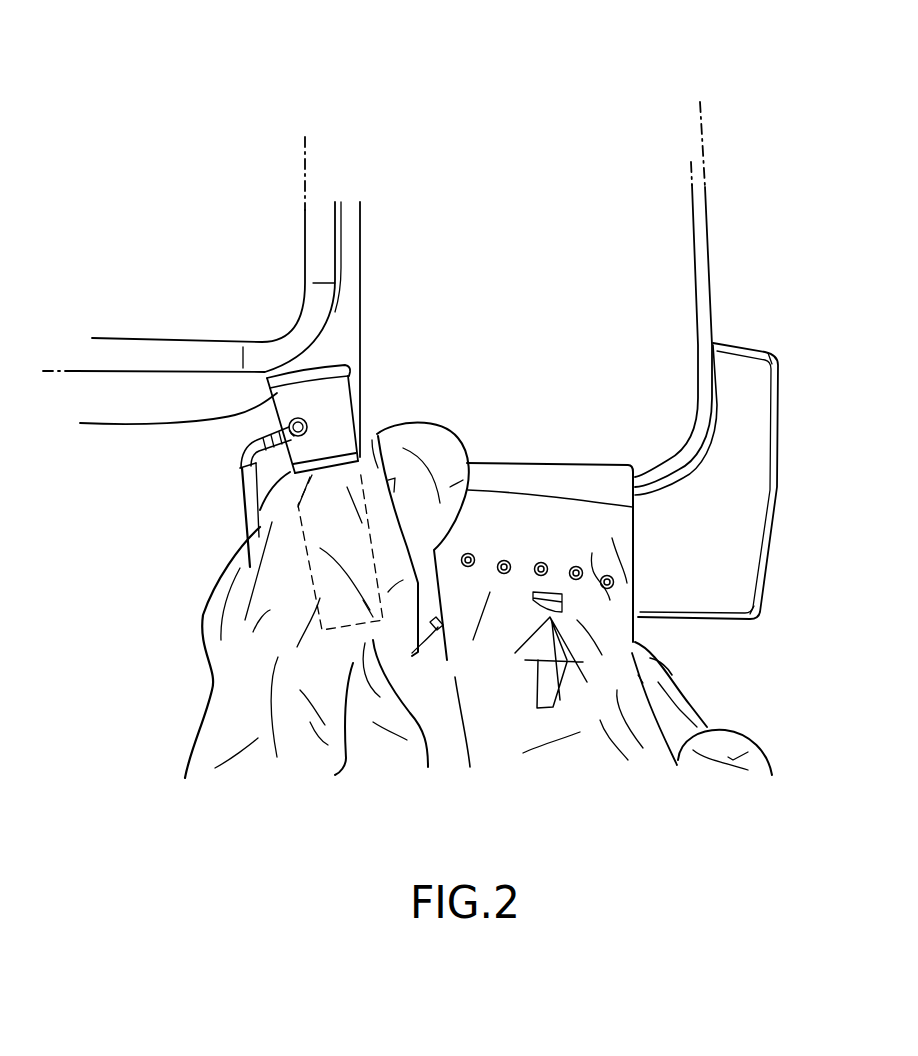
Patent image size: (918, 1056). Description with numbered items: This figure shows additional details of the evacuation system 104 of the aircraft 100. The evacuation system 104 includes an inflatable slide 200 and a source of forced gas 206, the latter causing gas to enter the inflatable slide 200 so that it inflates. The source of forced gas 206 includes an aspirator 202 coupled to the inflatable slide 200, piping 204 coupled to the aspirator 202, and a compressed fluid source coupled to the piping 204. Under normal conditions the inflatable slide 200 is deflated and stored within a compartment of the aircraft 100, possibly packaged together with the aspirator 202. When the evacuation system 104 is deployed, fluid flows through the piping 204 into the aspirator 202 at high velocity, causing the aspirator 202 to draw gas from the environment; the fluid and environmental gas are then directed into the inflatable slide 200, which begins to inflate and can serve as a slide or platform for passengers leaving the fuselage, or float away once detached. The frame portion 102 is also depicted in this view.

The aircraft 100 is at (231, 92).
The seat frame post 102 is at (710, 258).
The evacuation system 104 is at (144, 552).
The inflatable slide 200 is at (450, 755).
The aspirator 202 is at (337, 412).
The piping 204 is at (253, 500).
The source of forced gas 206 is at (288, 317).